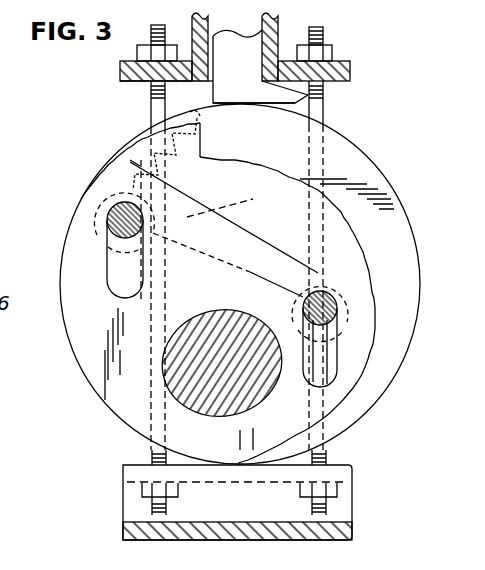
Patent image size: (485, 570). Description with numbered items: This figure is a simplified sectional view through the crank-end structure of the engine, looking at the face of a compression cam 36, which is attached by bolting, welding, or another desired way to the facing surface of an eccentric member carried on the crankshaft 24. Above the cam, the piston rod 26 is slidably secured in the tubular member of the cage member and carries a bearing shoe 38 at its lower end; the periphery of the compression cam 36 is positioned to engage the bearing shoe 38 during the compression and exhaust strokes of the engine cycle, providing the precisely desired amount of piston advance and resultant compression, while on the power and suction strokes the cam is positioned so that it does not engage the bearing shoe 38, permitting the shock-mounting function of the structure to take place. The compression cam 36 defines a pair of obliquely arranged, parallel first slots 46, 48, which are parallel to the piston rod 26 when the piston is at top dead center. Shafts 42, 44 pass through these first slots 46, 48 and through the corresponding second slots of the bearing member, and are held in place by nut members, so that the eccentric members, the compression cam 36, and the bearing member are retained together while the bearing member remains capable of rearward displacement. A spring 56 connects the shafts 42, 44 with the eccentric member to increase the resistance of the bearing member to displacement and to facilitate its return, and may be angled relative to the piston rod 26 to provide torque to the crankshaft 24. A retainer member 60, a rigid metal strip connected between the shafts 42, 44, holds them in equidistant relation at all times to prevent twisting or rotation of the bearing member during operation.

The crankshaft 24 is at (210, 377).
The piston rod 26 is at (245, 52).
The compression cam 36 is at (205, 292).
The bearing shoe 38 is at (293, 98).
The shaft 42 is at (113, 210).
The shaft 44 is at (327, 310).
The first slot 46 is at (117, 267).
The first slot 48 is at (333, 358).
The spring 56 is at (121, 150).
The retainer member 60 is at (253, 199).